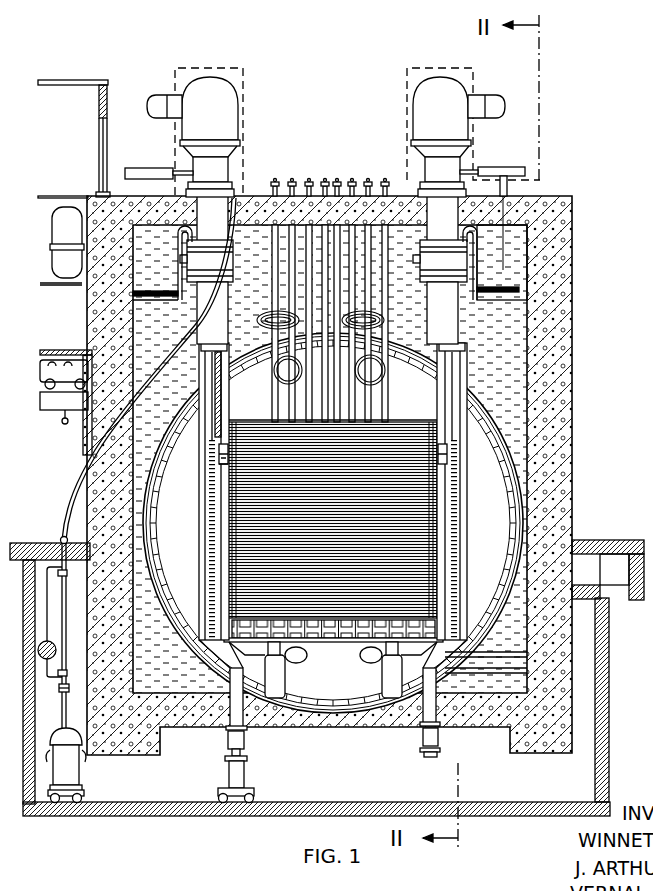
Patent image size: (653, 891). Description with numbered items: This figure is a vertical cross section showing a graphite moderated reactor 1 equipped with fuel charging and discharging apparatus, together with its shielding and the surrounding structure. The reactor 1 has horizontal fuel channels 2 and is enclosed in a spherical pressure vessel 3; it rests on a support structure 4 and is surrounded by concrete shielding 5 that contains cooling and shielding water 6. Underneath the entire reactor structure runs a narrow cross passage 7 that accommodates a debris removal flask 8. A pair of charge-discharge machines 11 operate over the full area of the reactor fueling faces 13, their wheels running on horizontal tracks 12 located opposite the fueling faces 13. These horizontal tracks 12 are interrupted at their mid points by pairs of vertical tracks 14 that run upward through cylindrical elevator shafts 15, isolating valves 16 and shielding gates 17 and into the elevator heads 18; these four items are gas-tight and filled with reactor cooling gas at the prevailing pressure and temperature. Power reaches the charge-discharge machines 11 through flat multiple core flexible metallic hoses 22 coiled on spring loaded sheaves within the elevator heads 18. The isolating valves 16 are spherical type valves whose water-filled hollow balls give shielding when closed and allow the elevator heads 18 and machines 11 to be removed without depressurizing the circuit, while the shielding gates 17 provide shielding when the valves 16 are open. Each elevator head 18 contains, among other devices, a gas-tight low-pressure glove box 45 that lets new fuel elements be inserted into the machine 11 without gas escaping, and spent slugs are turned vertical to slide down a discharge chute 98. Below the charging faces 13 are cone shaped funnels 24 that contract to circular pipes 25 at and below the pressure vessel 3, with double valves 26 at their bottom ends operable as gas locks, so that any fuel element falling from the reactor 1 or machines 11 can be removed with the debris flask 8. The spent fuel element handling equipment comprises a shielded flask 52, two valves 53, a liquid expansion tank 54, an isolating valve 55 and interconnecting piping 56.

The graphite moderated reactor 1 is at (415, 418).
The horizontal fuel channels 2 is at (415, 447).
The spherical pressure vessel 3 is at (523, 522).
The support structure 4 is at (420, 640).
The concrete shielding 5 is at (550, 470).
The cooling and shielding water 6 is at (527, 297).
The narrow cross passage 7 is at (412, 784).
The debris removal flask 8 is at (233, 775).
The charge-discharge machines 11 is at (217, 452).
The horizontal tracks 12 is at (217, 457).
The reactor fueling faces 13 is at (212, 505).
The vertical tracks 14 is at (200, 371).
The cylindrical elevator shafts 15 is at (200, 370).
The isolating valves 16 is at (327, 270).
The shielding gates 17 is at (233, 195).
The elevator heads 18 is at (228, 122).
The flat multiple core flexible metallic hoses 22 is at (215, 345).
The cone shaped funnels 24 is at (440, 665).
The circular pipes 25 is at (440, 670).
The double valves 26 is at (438, 728).
The gas-tight low-pressure glove box 45 is at (503, 170).
The shielded flask 52 is at (75, 767).
The valves 53 is at (62, 685).
The liquid expansion tank 54 is at (57, 653).
The isolating valve 55 is at (62, 537).
The interconnecting piping 56 is at (60, 573).
The discharge chute 98 is at (65, 505).